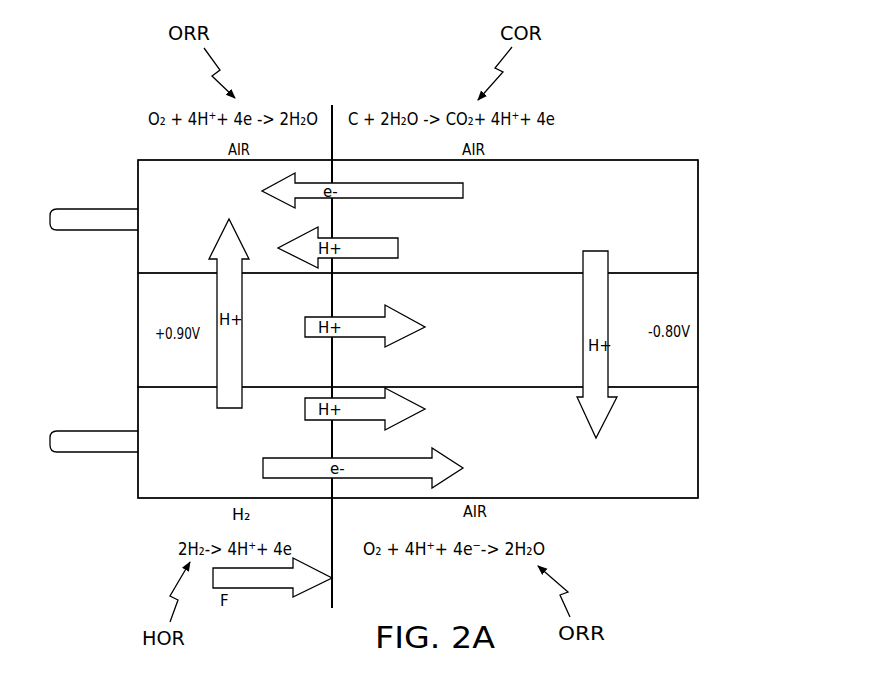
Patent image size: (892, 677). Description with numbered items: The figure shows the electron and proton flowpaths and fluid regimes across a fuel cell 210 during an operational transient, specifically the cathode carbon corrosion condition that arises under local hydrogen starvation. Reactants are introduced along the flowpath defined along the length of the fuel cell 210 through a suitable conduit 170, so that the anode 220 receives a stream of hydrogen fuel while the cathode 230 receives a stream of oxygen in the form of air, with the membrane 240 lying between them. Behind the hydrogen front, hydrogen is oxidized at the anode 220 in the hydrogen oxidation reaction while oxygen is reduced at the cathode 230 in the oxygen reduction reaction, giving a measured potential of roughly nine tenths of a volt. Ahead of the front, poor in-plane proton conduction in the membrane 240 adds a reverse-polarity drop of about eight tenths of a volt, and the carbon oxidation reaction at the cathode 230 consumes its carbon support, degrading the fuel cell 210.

The conduit 170 is at (97, 240).
The fuel cell 210 is at (680, 135).
The anode 220 is at (698, 440).
The cathode 230 is at (698, 207).
The membrane 240 is at (698, 323).